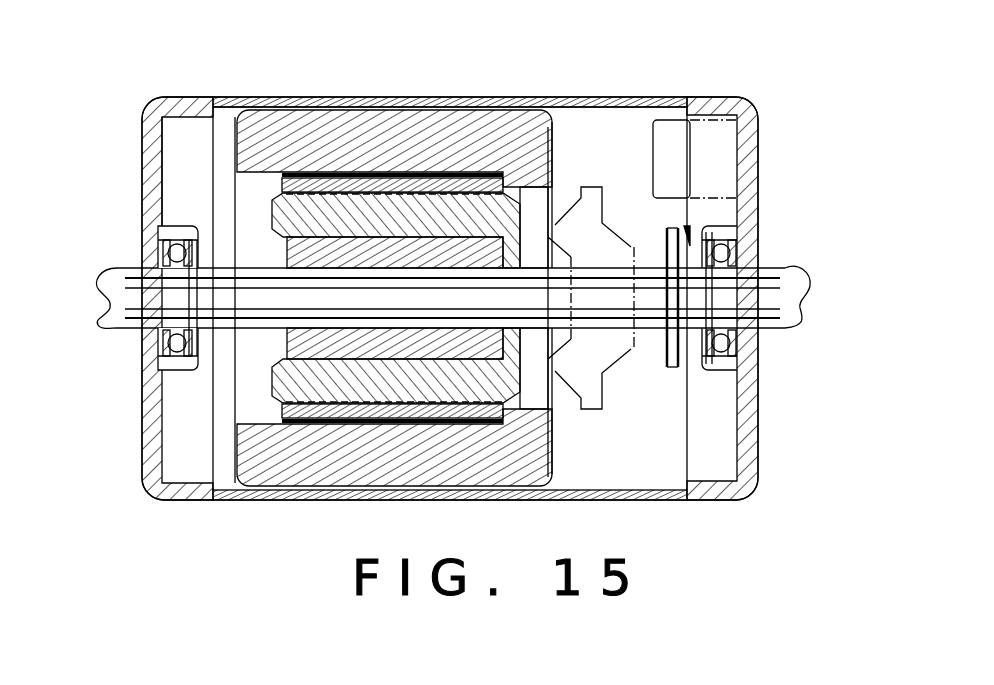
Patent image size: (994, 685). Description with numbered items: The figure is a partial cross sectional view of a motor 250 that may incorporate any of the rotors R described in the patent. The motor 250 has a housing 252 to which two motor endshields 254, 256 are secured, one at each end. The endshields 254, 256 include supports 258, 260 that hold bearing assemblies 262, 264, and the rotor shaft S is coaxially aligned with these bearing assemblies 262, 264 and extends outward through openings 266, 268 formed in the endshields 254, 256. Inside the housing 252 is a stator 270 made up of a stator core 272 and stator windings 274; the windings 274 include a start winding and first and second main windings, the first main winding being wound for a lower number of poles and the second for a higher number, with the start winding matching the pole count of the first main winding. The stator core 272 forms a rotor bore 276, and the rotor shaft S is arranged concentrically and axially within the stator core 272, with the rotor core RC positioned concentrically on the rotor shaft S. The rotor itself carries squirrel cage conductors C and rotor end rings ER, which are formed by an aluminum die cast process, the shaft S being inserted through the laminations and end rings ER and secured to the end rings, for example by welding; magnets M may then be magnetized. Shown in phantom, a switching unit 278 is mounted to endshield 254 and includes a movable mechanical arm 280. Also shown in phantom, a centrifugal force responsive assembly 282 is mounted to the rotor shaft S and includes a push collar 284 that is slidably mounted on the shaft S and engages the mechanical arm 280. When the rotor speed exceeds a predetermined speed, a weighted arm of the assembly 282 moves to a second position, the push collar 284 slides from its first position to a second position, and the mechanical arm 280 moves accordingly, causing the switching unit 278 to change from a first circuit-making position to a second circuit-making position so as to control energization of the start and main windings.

The motor 250 is at (426, 30).
The housing 252 is at (151, 94).
The motor endshield 254 is at (758, 178).
The motor endshield 256 is at (143, 145).
The support 258 is at (739, 232).
The support 260 is at (160, 227).
The bearing assembly 262 is at (757, 357).
The bearing assembly 264 is at (155, 362).
The opening 266 is at (760, 330).
The opening 268 is at (141, 330).
The stator 270 is at (441, 110).
The stator core 272 is at (373, 107).
The stator windings 274 is at (408, 158).
The rotor bore 276 is at (282, 176).
The switching unit 278 is at (650, 195).
The movable mechanical arm 280 is at (689, 246).
The centrifugal force responsive assembly 282 is at (629, 190).
The push collar 284 is at (665, 366).
The magnets M is at (523, 192).
The rotor end rings ER is at (271, 205).
The rotor R is at (535, 402).
The rotor shaft S is at (784, 266).
The squirrel cage conductors C is at (394, 226).
The rotor core RC is at (401, 264).